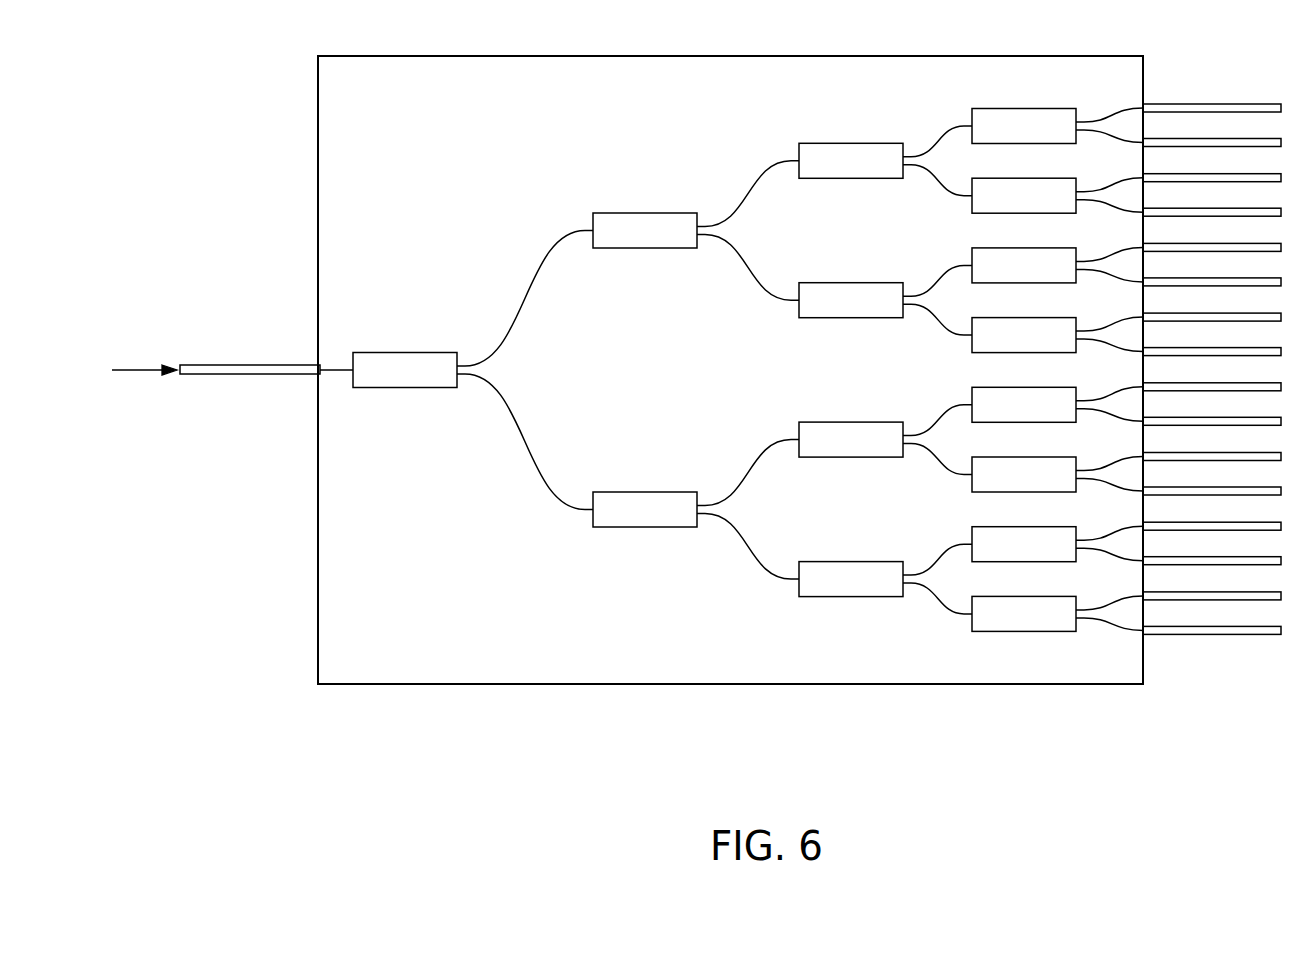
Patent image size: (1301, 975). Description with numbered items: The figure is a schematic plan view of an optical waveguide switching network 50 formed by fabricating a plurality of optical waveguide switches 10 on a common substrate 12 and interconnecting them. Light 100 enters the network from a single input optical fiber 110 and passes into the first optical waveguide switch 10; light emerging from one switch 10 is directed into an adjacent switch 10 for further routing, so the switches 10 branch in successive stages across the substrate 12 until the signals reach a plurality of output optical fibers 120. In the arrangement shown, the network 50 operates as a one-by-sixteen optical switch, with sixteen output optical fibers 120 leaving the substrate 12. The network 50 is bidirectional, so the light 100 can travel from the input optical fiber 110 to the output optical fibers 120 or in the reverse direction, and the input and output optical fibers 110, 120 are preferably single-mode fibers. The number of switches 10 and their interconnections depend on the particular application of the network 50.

The optical waveguide switch 10 is at (393, 381).
The common substrate 12 is at (378, 646).
The optical waveguide switching network 50 is at (730, 424).
The light 100 is at (140, 368).
The input optical fiber 110 is at (249, 363).
The output optical fibers 120 is at (1212, 102).